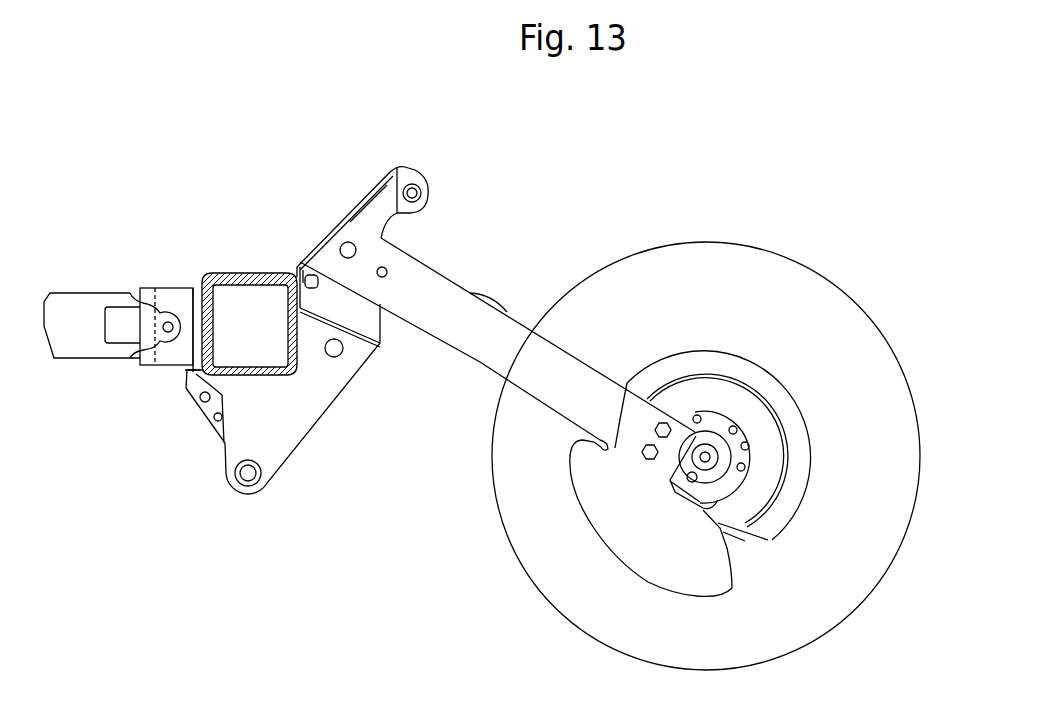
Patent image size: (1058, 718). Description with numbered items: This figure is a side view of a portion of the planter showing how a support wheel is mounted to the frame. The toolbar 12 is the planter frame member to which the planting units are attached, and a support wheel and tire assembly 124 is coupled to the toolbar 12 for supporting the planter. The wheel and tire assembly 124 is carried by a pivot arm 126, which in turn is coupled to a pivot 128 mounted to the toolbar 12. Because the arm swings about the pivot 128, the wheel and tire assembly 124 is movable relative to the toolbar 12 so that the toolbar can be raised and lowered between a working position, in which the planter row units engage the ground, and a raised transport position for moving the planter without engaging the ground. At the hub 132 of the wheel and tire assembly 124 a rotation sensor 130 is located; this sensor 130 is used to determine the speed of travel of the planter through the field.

The toolbar 12 is at (237, 283).
The pivot 128 is at (322, 272).
The pivot arm 126 is at (512, 337).
The support wheel and tire assembly 124 is at (648, 266).
The hub 132 is at (708, 457).
The rotation sensor 130 is at (710, 460).